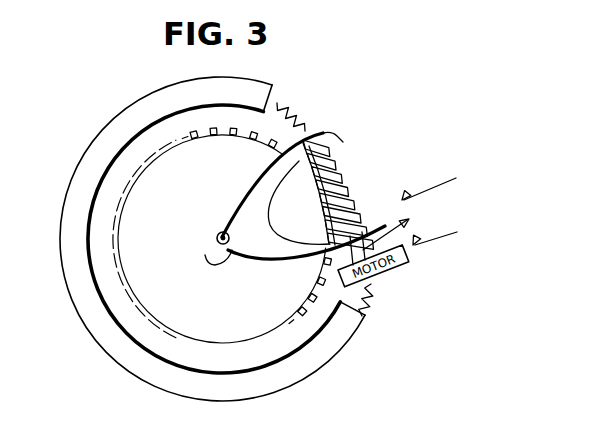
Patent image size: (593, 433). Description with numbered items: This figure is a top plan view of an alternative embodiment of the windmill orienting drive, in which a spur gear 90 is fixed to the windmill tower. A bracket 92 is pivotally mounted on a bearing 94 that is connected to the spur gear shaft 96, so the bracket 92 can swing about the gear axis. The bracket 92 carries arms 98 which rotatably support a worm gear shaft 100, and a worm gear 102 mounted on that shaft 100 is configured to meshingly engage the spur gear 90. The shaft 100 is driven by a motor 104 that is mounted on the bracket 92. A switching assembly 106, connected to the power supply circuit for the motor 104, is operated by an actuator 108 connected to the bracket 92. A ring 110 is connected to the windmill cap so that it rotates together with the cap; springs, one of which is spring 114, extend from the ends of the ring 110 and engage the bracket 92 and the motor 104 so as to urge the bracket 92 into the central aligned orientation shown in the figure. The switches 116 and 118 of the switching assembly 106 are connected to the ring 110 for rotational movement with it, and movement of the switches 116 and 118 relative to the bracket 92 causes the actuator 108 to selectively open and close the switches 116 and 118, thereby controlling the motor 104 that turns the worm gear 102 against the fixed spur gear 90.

The spur gear 90 is at (187, 190).
The bracket 92 is at (250, 170).
The bearing 94 is at (205, 255).
The spur gear shaft 96 is at (217, 235).
The arms 98 is at (328, 141).
The worm gear shaft 100 is at (323, 149).
The worm gear 102 is at (347, 177).
The motor 104 is at (328, 274).
The switching assembly 106 is at (398, 212).
The actuator 108 is at (330, 222).
The ring 110 is at (90, 306).
The spring 114 is at (297, 113).
The switch 116 is at (404, 199).
The switch 118 is at (414, 244).